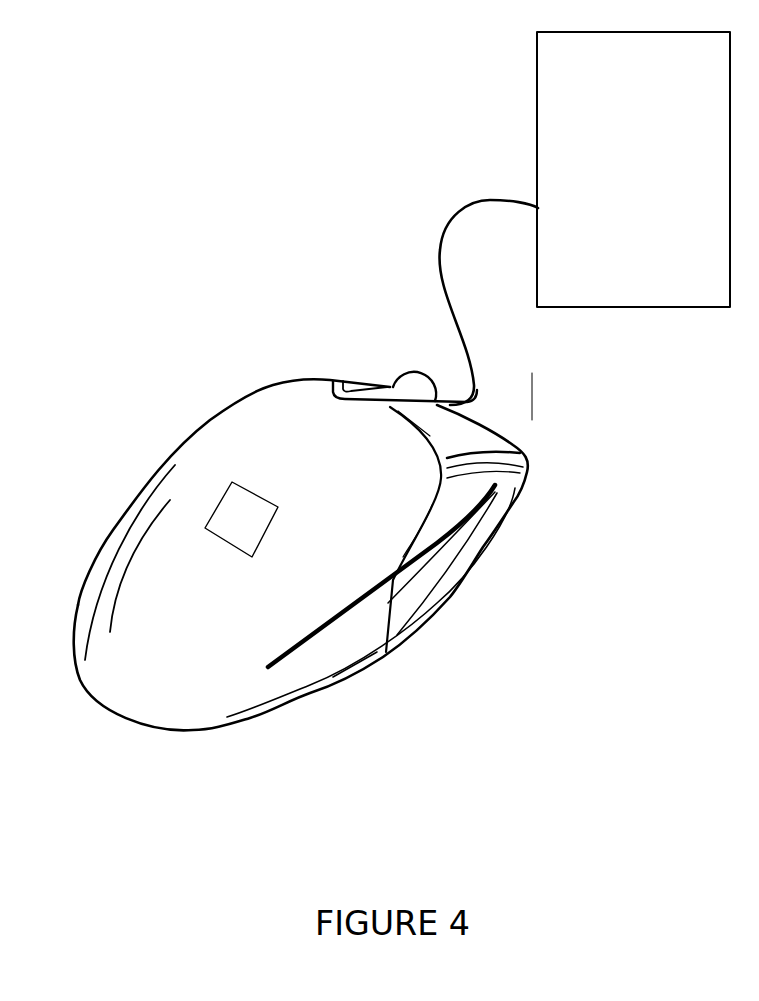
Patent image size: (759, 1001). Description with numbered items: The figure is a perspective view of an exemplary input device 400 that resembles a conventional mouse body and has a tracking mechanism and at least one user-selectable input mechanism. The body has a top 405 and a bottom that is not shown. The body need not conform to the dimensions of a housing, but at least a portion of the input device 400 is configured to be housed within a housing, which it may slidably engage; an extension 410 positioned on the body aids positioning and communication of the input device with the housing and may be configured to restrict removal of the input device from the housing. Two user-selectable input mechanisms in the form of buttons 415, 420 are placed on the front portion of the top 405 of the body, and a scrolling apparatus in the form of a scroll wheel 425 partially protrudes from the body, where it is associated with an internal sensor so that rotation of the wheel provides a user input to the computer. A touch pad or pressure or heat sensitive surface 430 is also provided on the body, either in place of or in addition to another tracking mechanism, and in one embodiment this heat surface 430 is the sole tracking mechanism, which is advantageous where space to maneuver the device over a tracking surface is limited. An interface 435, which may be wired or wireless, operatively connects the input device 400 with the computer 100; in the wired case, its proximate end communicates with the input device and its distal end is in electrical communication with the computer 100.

The computer 100 is at (648, 202).
The input device 400 is at (140, 418).
The top 405 is at (190, 608).
The extension 410 is at (437, 567).
The button 415 is at (336, 378).
The button 420 is at (447, 429).
The scroll wheel 425 is at (412, 385).
The pressure or heat sensitive surface 430 is at (267, 513).
The interface 435 is at (478, 198).